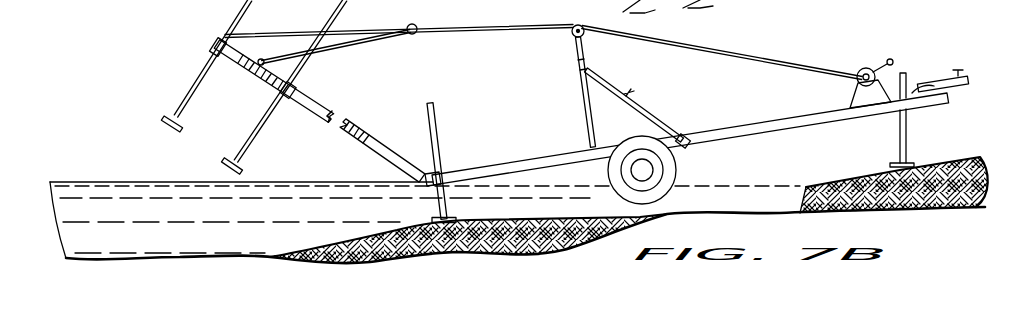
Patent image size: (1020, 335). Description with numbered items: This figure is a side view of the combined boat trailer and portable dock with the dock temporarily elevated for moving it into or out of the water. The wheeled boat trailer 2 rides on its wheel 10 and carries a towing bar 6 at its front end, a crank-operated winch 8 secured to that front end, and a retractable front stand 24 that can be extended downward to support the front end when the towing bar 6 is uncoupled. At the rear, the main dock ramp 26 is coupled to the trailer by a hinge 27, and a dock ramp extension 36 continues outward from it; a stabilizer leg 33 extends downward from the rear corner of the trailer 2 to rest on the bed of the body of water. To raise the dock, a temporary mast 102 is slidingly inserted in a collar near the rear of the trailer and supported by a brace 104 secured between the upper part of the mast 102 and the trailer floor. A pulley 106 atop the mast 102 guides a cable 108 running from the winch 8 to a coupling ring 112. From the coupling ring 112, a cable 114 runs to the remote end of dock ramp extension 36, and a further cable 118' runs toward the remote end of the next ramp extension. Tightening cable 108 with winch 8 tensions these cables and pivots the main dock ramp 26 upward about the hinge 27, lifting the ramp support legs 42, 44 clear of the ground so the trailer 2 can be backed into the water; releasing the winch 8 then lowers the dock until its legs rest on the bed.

The wheeled boat trailer 2 is at (702, 126).
The towing bar 6 is at (922, 88).
The crank-operated winch 8 is at (864, 66).
The wheel 10 is at (682, 168).
The retractable front stand 24 is at (908, 142).
The main dock ramp 26 is at (352, 127).
The hinge 27 is at (429, 160).
The stabilizer leg 33 is at (449, 212).
The dock ramp extension 36 is at (263, 86).
The support rod 42 is at (184, 96).
The support rod 44 is at (248, 152).
The temporary mast 102 is at (578, 100).
The brace 104 is at (640, 106).
The pulley 106 is at (572, 36).
The cable 108 is at (697, 50).
The coupling ring 112 is at (422, 10).
The cable 114 is at (342, 44).
The cable 118' is at (399, 25).